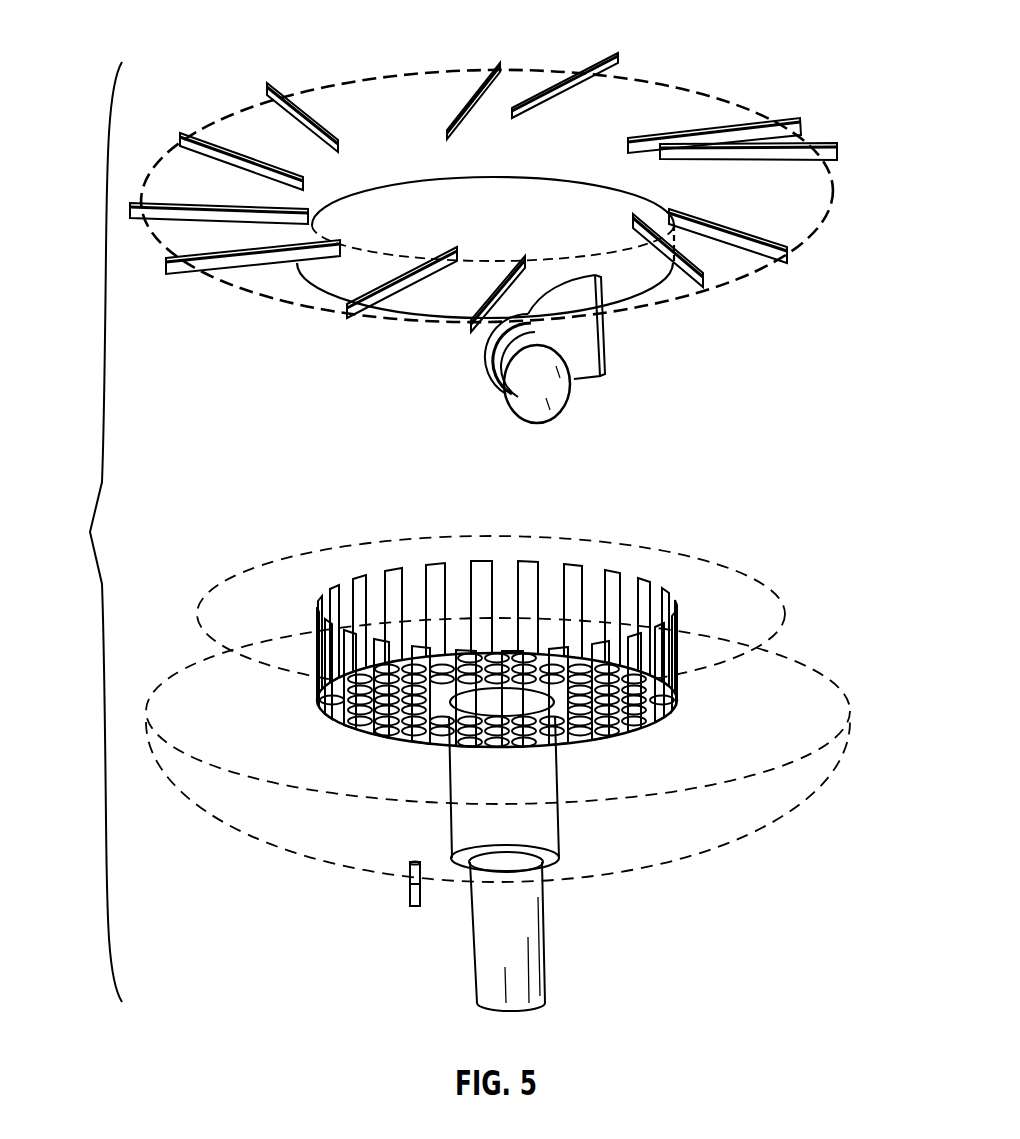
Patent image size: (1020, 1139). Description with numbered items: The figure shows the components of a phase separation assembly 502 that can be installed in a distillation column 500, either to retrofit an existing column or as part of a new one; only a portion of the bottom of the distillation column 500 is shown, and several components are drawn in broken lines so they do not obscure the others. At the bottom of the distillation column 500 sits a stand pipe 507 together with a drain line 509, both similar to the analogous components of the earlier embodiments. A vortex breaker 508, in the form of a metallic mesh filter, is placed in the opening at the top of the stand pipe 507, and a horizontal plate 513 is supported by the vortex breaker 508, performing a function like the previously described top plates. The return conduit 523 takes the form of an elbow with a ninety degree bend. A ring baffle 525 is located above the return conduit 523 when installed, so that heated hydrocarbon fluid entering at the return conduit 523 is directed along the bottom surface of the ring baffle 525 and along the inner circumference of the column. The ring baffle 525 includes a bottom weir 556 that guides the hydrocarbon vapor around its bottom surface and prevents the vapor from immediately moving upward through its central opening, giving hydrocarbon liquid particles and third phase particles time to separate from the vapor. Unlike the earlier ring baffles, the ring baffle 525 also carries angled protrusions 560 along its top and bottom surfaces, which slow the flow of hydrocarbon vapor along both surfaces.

The distillation column 500 is at (800, 782).
The phase separation assembly 502 is at (79, 532).
The stand pipe 507 is at (530, 916).
The vortex breaker 508 is at (330, 706).
The drain line 509 is at (412, 896).
The horizontal plate 513 is at (305, 578).
The return conduit 523 is at (557, 390).
The ring baffle 525 is at (669, 92).
The bottom weir 556 is at (387, 158).
The angled protrusions 560 is at (822, 162).